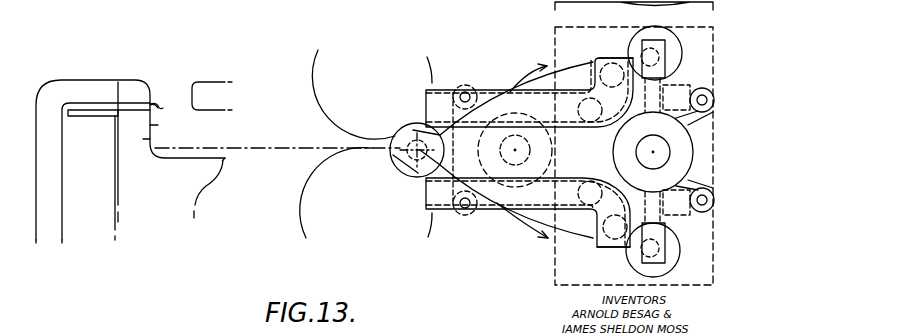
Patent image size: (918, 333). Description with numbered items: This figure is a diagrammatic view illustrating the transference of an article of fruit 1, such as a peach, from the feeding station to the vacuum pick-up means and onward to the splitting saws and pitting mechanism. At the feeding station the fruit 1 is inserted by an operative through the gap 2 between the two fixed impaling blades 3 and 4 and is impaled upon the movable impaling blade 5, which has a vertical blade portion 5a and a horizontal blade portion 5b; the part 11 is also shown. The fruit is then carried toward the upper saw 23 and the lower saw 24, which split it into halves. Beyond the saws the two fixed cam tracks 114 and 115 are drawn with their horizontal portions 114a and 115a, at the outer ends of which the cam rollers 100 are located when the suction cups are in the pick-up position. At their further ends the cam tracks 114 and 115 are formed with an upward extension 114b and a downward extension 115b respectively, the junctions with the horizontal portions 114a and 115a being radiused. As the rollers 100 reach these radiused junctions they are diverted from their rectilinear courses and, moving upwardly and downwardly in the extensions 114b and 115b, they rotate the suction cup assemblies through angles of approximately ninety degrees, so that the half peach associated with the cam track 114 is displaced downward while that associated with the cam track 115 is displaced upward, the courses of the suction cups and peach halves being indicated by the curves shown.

The article of fruit 1 is at (400, 141).
The gap 2 is at (166, 100).
The fixed impaling blade 3 is at (160, 111).
The fixed impaling blade 4 is at (192, 99).
The movable impaling blade 5 is at (150, 139).
The vertical blade portion 5a is at (158, 125).
The horizontal blade portion 5b is at (200, 157).
The container 11 is at (43, 143).
The upper saw 23 is at (310, 107).
The lower saw 24 is at (306, 203).
The cam roller 100 is at (592, 82).
The cam track 114 is at (432, 103).
The horizontal portion 114a is at (516, 98).
The upward extension 114b is at (600, 47).
The cam track 115 is at (430, 195).
The horizontal portion 115a is at (516, 202).
The downward extension 115b is at (596, 238).